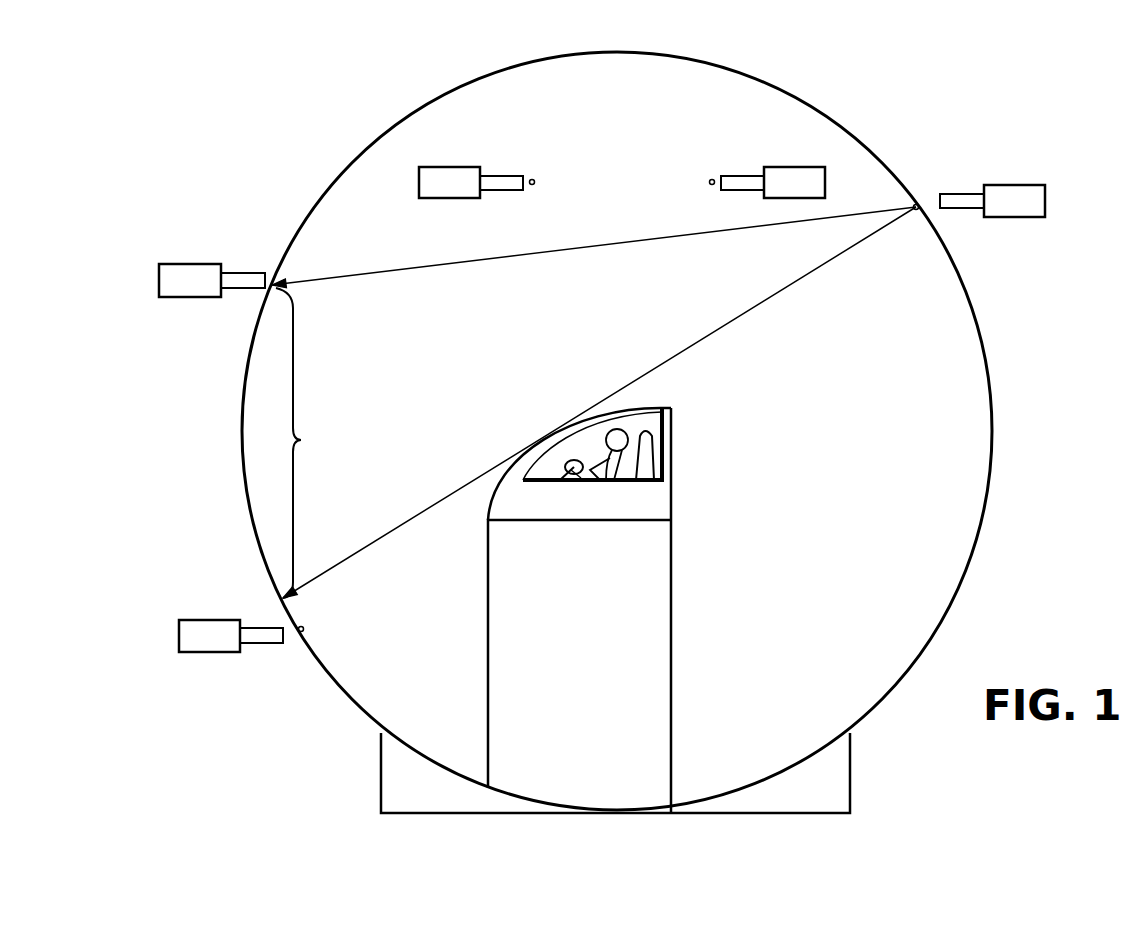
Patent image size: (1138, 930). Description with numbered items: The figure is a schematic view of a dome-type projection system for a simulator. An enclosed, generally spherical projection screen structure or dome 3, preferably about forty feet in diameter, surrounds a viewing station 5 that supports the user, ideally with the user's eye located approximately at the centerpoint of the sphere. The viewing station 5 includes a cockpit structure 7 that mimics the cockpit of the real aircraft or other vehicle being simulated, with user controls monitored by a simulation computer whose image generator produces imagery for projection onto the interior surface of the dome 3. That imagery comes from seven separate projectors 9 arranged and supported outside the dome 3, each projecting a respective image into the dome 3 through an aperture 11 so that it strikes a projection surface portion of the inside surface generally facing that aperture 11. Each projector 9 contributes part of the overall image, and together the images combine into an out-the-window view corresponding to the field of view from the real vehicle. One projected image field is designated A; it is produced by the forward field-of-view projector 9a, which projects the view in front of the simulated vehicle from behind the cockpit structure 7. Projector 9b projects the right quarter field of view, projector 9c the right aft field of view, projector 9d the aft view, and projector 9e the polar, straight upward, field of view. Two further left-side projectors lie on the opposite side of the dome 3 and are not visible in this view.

The projection screen structure or dome 3 is at (765, 80).
The viewing station 5 is at (660, 540).
The cockpit structure 7 is at (578, 505).
The projector 9 is at (602, 417).
The forward field-of-view projector 9a is at (1012, 215).
The right quarter projector 9b is at (782, 170).
The right aft projector 9c is at (443, 191).
The aft projector 9d is at (190, 287).
The polar projector 9e is at (212, 645).
The aperture 11 is at (537, 180).
The projected image field A is at (299, 443).